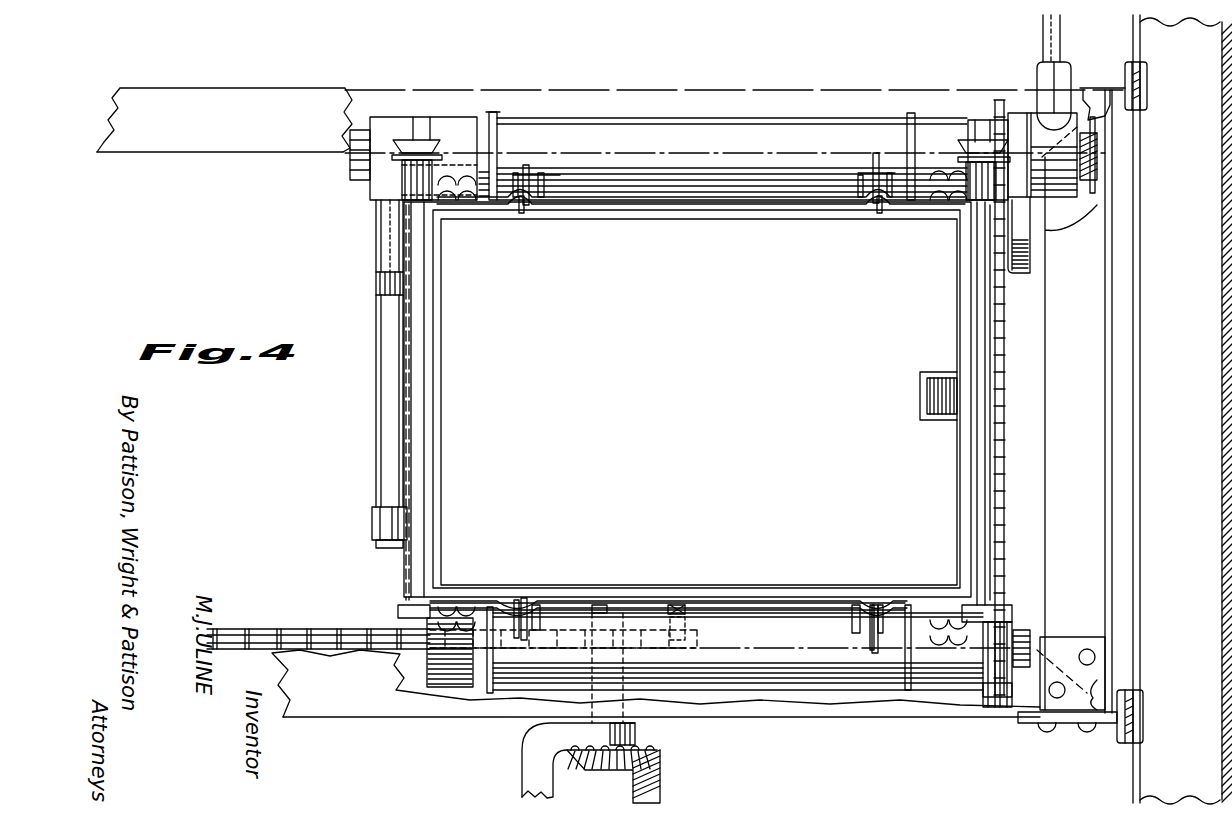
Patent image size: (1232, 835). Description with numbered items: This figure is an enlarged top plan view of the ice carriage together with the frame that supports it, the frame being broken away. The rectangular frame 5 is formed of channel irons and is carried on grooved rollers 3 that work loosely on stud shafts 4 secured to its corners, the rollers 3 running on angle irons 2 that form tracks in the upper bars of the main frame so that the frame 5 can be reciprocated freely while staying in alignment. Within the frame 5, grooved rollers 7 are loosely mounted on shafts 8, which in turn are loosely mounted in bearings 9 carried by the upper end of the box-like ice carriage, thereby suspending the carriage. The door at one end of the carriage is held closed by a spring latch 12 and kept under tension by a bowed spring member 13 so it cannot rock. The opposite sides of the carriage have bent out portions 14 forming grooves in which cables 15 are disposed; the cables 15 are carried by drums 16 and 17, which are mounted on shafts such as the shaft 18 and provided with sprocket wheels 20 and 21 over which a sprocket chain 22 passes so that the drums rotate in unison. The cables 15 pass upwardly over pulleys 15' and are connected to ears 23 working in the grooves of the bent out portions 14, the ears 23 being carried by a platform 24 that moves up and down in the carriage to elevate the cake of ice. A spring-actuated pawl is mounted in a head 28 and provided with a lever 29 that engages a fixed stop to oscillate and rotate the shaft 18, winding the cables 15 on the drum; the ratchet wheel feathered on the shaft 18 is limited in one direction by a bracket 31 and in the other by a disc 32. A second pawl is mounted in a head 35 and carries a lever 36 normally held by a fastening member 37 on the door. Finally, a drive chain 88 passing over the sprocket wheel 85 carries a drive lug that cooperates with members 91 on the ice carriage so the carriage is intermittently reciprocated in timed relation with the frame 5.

The angle irons 2 is at (1141, 42).
The grooved rollers 3 is at (1147, 86).
The stud shafts 4 is at (1120, 86).
The rectangular frame 5 is at (664, 411).
The grooved rollers 7 is at (432, 148).
The shafts 8 is at (420, 338).
The bearings 9 is at (412, 165).
The spring latch 12 is at (405, 400).
The bowed spring member 13 is at (940, 380).
The bent out portions 14 is at (510, 204).
The cables 15 is at (702, 388).
The pulleys 15' is at (704, 391).
The drum 16 is at (725, 156).
The drum 17 is at (720, 649).
The shaft 18 is at (483, 152).
The sprocket wheel 20 is at (1005, 100).
The sprocket wheel 21 is at (1000, 712).
The sprocket chain 22 is at (1005, 346).
The ears 23 is at (530, 210).
The platform 24 is at (699, 402).
The head 28 is at (1057, 180).
The lever 29 is at (1045, 30).
The bracket 31 is at (1020, 255).
The disc 32 is at (1093, 128).
The head 35 is at (385, 222).
The lever 36 is at (378, 320).
The fastening member 37 is at (378, 525).
The sprocket wheel 85 is at (657, 606).
The drive chain 88 is at (293, 632).
The members 91 is at (600, 605).